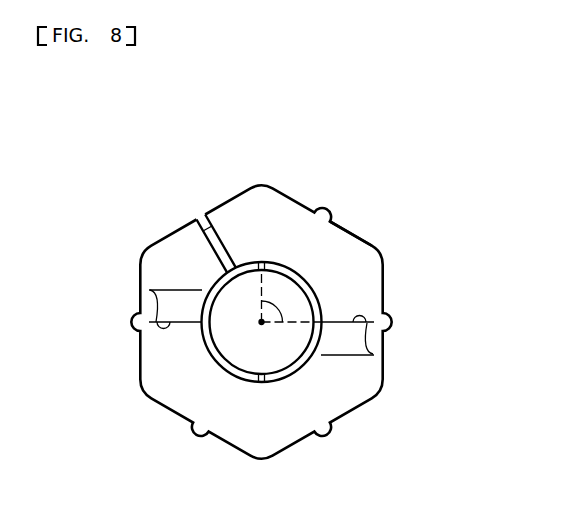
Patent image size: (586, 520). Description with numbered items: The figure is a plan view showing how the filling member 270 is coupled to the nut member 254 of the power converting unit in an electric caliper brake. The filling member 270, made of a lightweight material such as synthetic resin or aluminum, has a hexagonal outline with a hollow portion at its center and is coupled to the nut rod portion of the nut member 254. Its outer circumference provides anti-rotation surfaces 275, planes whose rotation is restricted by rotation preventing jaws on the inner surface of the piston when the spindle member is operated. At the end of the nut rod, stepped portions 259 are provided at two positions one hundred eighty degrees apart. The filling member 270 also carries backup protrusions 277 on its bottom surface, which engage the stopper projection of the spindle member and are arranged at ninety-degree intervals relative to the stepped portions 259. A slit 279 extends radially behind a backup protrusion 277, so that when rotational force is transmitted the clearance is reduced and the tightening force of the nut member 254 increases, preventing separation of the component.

The filling member 270 is at (419, 243).
The nut member 254 is at (203, 349).
The stepped portion 259 is at (274, 262).
The anti-rotation surface 275 is at (350, 232).
The backup protrusion 277 is at (150, 290).
The slit 279 is at (199, 221).